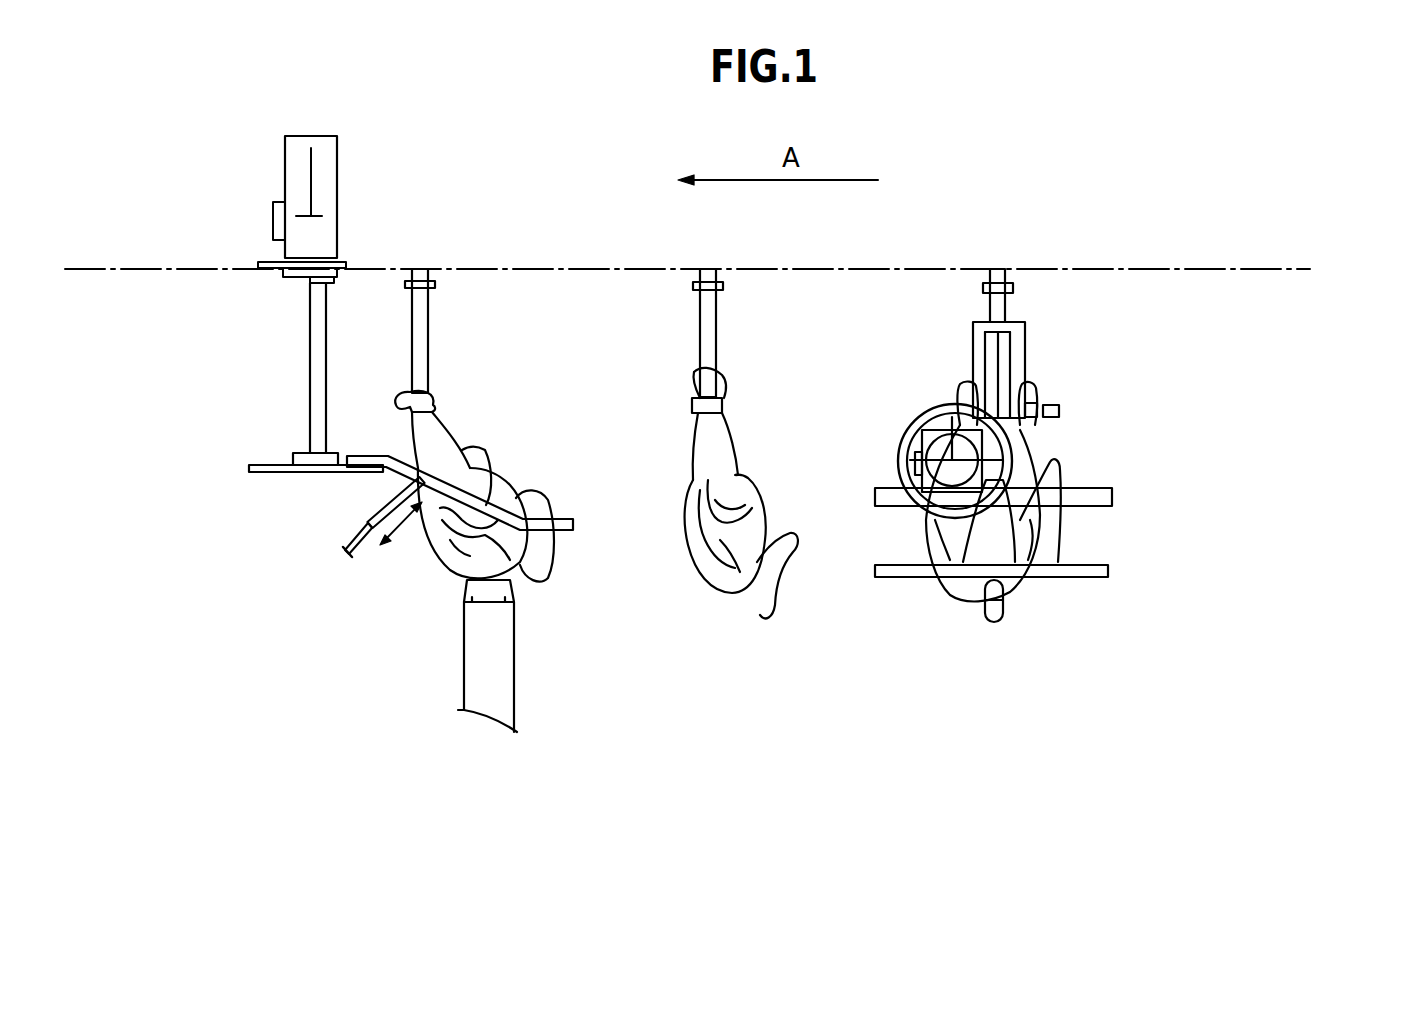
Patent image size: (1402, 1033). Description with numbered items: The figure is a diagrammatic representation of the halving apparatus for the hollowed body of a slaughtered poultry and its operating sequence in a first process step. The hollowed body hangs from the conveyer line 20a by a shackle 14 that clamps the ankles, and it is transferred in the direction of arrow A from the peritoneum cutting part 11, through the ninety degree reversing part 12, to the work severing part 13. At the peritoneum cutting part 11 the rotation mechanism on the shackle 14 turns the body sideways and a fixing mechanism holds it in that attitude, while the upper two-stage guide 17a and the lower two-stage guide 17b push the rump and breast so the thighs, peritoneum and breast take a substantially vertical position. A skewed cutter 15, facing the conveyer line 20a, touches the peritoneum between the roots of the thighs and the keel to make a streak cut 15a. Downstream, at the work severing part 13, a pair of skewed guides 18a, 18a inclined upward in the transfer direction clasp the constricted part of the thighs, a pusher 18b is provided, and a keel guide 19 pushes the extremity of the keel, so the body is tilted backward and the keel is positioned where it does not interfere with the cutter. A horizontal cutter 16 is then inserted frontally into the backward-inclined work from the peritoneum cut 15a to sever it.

The peritoneum cutting part 11 is at (1003, 744).
The 90 degree reversing part 12 is at (751, 742).
The work severing part 13 is at (432, 742).
The shackle 14 is at (422, 336).
The skewed cutter 15 is at (912, 420).
The streak cut 15a is at (1017, 476).
The horizontal cutter 16 is at (283, 484).
The upper two-stage guide 17a is at (1100, 490).
The lower two-stage guide 17b is at (1093, 578).
The skewed guides 18a is at (571, 519).
The pusher 18b is at (503, 658).
The keel guide 19 is at (385, 503).
The conveyer line 20a is at (1150, 268).